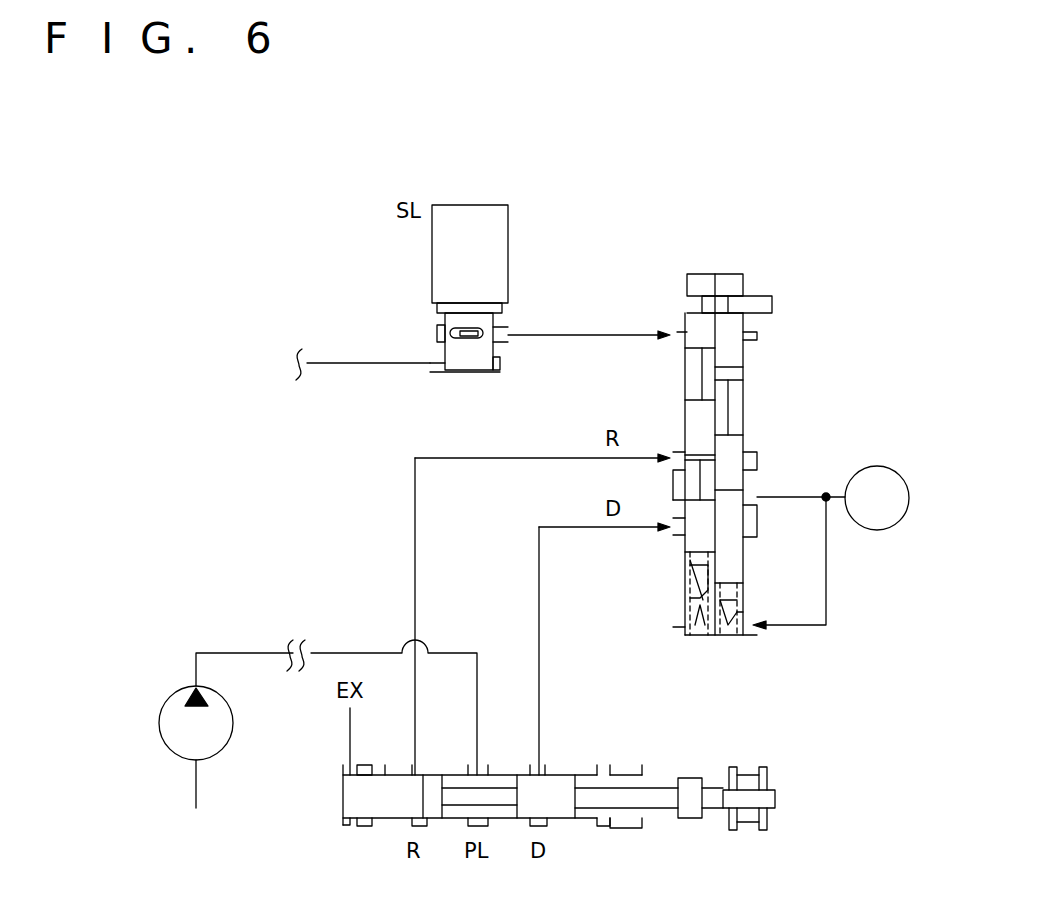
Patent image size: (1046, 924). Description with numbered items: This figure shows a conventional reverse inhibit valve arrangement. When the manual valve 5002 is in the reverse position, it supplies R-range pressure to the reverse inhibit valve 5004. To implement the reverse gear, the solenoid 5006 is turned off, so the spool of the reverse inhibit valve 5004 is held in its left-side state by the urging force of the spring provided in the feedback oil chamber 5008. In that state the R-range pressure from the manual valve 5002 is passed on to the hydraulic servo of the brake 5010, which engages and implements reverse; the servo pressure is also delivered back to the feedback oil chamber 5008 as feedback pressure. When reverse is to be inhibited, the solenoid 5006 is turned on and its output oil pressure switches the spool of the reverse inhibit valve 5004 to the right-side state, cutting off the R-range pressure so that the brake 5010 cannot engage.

The manual valve 5002 is at (580, 756).
The reverse inhibit valve 5004 is at (802, 480).
The solenoid 5006 is at (490, 205).
The feedback oil chamber 5008 is at (703, 640).
The brake 5010 is at (868, 470).